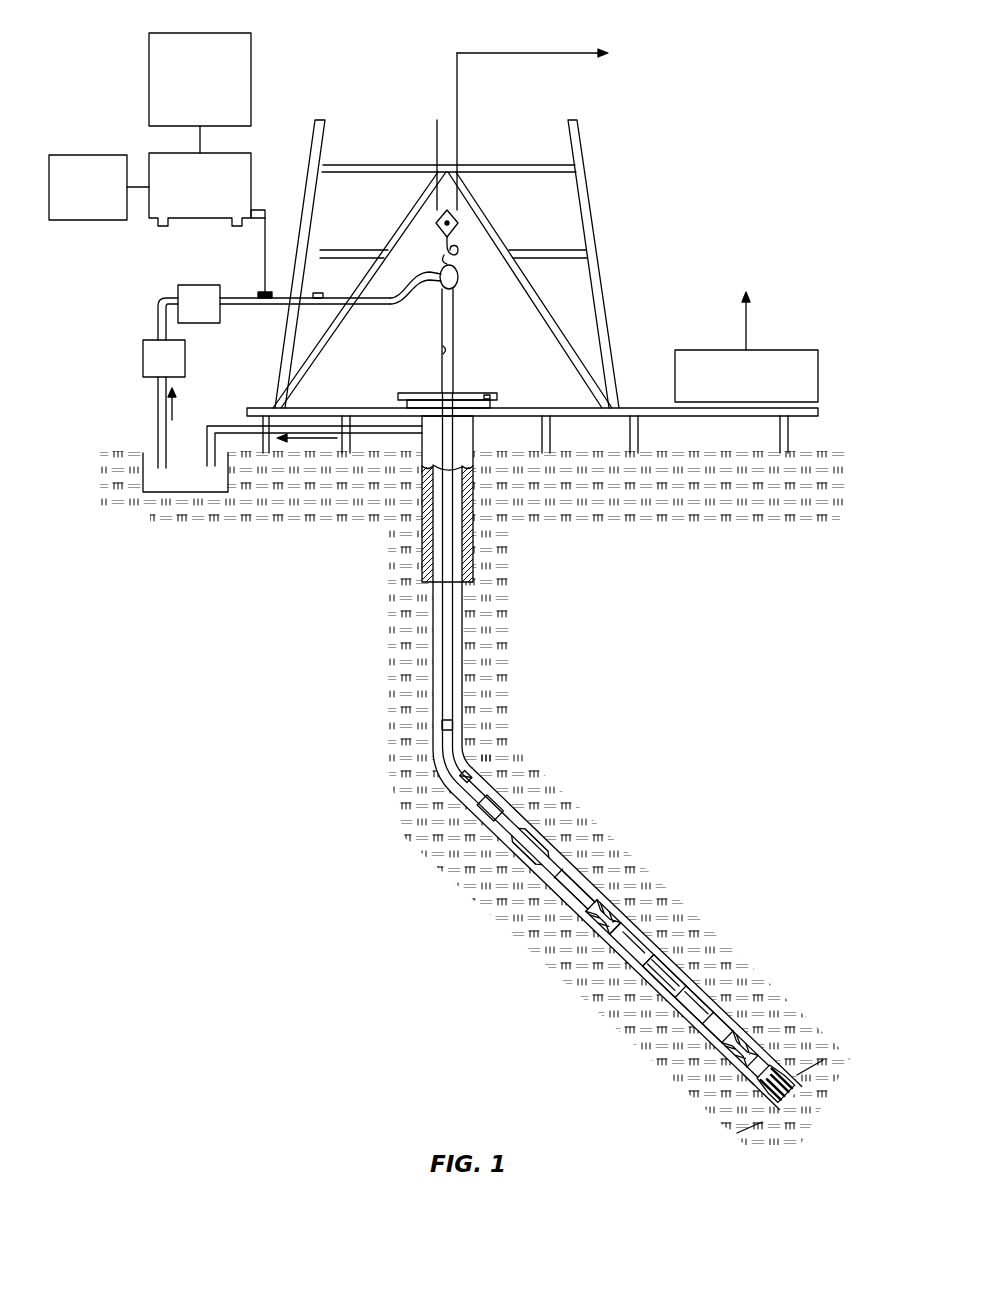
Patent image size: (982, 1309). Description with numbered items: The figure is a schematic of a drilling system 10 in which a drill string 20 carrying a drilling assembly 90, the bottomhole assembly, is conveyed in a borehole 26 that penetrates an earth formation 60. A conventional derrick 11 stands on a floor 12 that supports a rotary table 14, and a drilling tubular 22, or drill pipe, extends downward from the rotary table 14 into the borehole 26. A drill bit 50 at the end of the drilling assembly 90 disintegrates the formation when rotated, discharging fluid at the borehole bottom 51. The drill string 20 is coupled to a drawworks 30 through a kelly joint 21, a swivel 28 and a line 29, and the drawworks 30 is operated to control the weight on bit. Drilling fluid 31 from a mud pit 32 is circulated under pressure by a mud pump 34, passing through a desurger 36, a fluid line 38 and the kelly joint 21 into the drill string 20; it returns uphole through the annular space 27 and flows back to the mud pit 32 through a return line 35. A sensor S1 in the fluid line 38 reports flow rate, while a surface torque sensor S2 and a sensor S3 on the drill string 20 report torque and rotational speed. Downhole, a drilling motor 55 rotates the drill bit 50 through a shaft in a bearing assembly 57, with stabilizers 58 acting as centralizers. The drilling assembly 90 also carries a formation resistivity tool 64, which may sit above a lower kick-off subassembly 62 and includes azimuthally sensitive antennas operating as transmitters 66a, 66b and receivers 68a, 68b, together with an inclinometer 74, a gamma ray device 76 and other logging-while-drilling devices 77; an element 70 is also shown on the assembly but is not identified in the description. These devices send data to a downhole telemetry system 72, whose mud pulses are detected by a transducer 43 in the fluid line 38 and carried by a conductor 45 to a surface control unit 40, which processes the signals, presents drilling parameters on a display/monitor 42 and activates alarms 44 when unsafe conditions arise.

The drilling system 10 is at (368, 66).
The derrick 11 is at (600, 265).
The floor 12 is at (622, 406).
The rotary table 14 is at (465, 393).
The drill string 20 is at (458, 598).
The kelly joint 21 is at (455, 342).
The drilling tubular 22 is at (431, 650).
The borehole 26 is at (467, 753).
The annular space 27 is at (480, 783).
The swivel 28 is at (436, 286).
The line 29 is at (458, 147).
The drawworks 30 is at (805, 350).
The drilling fluid 31 is at (156, 477).
The mud pit 32 is at (214, 488).
The mud pump 34 is at (143, 356).
The return line 35 is at (388, 432).
The desurger 36 is at (193, 285).
The fluid line 38 is at (278, 303).
The surface control unit 40 is at (170, 153).
The display/monitor 42 is at (204, 32).
The transducer 43 is at (263, 291).
The alarms 44 is at (105, 222).
The conductor 45 is at (265, 208).
The drill bit 50 is at (788, 1071).
The borehole bottom 51 is at (762, 1122).
The drilling motor 55 is at (592, 873).
The bearing assembly 57 is at (716, 1060).
The stabilizers 58 is at (612, 908).
The earth formation 60 is at (291, 825).
The lower kick-off subassembly 62 is at (730, 1020).
The formation resistivity tool 64 is at (667, 993).
The transmitter antenna 66a is at (610, 940).
The transmitter antenna 66b is at (687, 1000).
The receiver antenna 68a is at (647, 970).
The receiver antenna 68b is at (636, 969).
The MWD tool 70 is at (490, 822).
The downhole telemetry system 72 is at (441, 718).
The inclinometer 74 is at (668, 990).
The gamma ray device 76 is at (705, 1000).
The logging-while-drilling devices 77 is at (529, 869).
The drilling assembly 90 is at (567, 838).
The sensor S1 is at (318, 293).
The surface torque sensor S2 is at (443, 350).
The sensor S3 is at (488, 395).